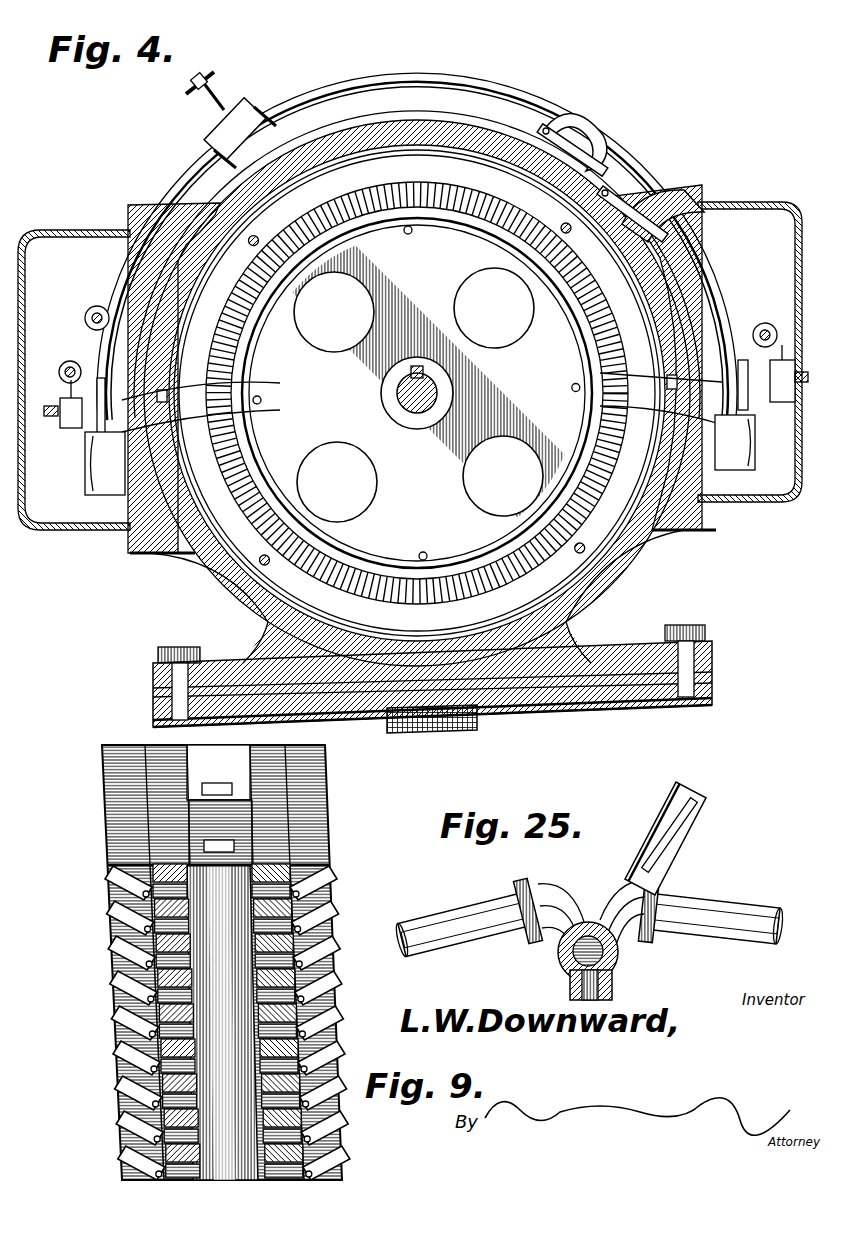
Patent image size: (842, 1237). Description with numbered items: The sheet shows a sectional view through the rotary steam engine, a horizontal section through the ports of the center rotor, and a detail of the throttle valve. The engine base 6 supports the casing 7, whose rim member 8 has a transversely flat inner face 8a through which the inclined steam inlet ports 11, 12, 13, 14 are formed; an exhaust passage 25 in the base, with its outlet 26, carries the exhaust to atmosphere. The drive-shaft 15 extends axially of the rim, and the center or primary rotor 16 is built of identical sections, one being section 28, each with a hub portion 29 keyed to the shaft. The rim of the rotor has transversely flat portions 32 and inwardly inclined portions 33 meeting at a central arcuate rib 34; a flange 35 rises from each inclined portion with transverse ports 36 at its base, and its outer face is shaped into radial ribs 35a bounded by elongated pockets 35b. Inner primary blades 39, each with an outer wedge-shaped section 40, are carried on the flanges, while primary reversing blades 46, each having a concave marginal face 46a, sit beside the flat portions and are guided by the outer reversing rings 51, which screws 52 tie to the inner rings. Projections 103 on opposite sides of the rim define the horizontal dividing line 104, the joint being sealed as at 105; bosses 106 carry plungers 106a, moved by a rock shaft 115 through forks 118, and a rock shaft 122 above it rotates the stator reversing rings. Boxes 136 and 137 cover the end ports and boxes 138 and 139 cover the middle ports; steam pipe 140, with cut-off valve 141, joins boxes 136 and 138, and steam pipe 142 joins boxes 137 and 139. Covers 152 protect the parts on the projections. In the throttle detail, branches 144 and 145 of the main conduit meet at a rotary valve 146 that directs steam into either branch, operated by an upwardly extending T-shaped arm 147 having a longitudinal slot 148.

In FIG. 4, the casing 7 is at (307, 125).
In FIG. 4, the steam pipe 140 is at (411, 70).
In FIG. 4, the rim member 8 is at (480, 120).
In FIG. 4, the inner face 8a is at (362, 637).
In FIG. 4, the steam inlet port 12 is at (558, 124).
In FIG. 4, the box 138 is at (600, 126).
In FIG. 4, the box 139 is at (652, 190).
In FIG. 4, the steam inlet port 13 is at (688, 196).
In FIG. 4, the covers 152 is at (62, 230).
In FIG. 4, the cut-off valve 141 is at (213, 136).
In FIG. 4, the rock shaft 122 is at (97, 305).
In FIG. 4, the boss 106 is at (112, 372).
In FIG. 4, the rock shaft 115 is at (62, 364).
In FIG. 4, the plunger 106a is at (50, 418).
In FIG. 4, the box 136 is at (100, 492).
In FIG. 4, the fork 118 is at (742, 455).
In FIG. 4, the box 137 is at (738, 480).
In FIG. 4, the steam pipe 142 is at (716, 267).
In FIG. 4, the screws 52 is at (255, 236).
In FIG. 4, the section 28 is at (334, 348).
In FIG. 4, the hub portion 29 is at (435, 386).
In FIG. 4, the center or primary rotor 16 is at (425, 370).
In FIG. 9, the center or primary rotor 16 is at (330, 821).
In FIG. 4, the drive-shaft 15 is at (414, 410).
In FIG. 4, the steam-tight joint 105 is at (422, 381).
In FIG. 4, the dividing line 104 is at (421, 414).
In FIG. 4, the transversely flat portions 32 is at (596, 318).
In FIG. 9, the transversely flat portions 32 is at (330, 930).
In FIG. 4, the primary reversing blades 46 is at (600, 447).
In FIG. 9, the primary reversing blades 46 is at (330, 880).
In FIG. 4, the outer reversing rings 51 is at (447, 620).
In FIG. 9, the outer reversing rings 51 is at (110, 828).
In FIG. 4, the steam inlet port 14 is at (428, 393).
In FIG. 4, the flange 35 is at (640, 575).
In FIG. 9, the flange 35 is at (150, 772).
In FIG. 4, the projections 103 is at (700, 508).
In FIG. 4, the steam inlet port 11 is at (137, 560).
In FIG. 4, the exhaust passage 25 is at (358, 712).
In FIG. 4, the outlet 26 is at (434, 728).
In FIG. 4, the engine base 6 is at (652, 694).
In FIG. 9, the inner primary blades 39 is at (205, 770).
In FIG. 9, the outer wedge-shaped section 40 is at (230, 822).
In FIG. 9, the transverse ports 36 is at (140, 916).
In FIG. 9, the concave marginal face 46a is at (335, 945).
In FIG. 9, the arcuate rib 34 is at (335, 976).
In FIG. 9, the inwardly inclined portions 33 is at (335, 1041).
In FIG. 9, the elongated pockets 35b is at (125, 1011).
In FIG. 9, the radial ribs 35a is at (345, 1131).
In FIG. 25, the branch 144 is at (441, 920).
In FIG. 25, the branch 145 is at (736, 916).
In FIG. 25, the rotary valve 146 is at (618, 962).
In FIG. 25, the T-shaped arm 147 is at (702, 832).
In FIG. 25, the longitudinal slot 148 is at (648, 848).